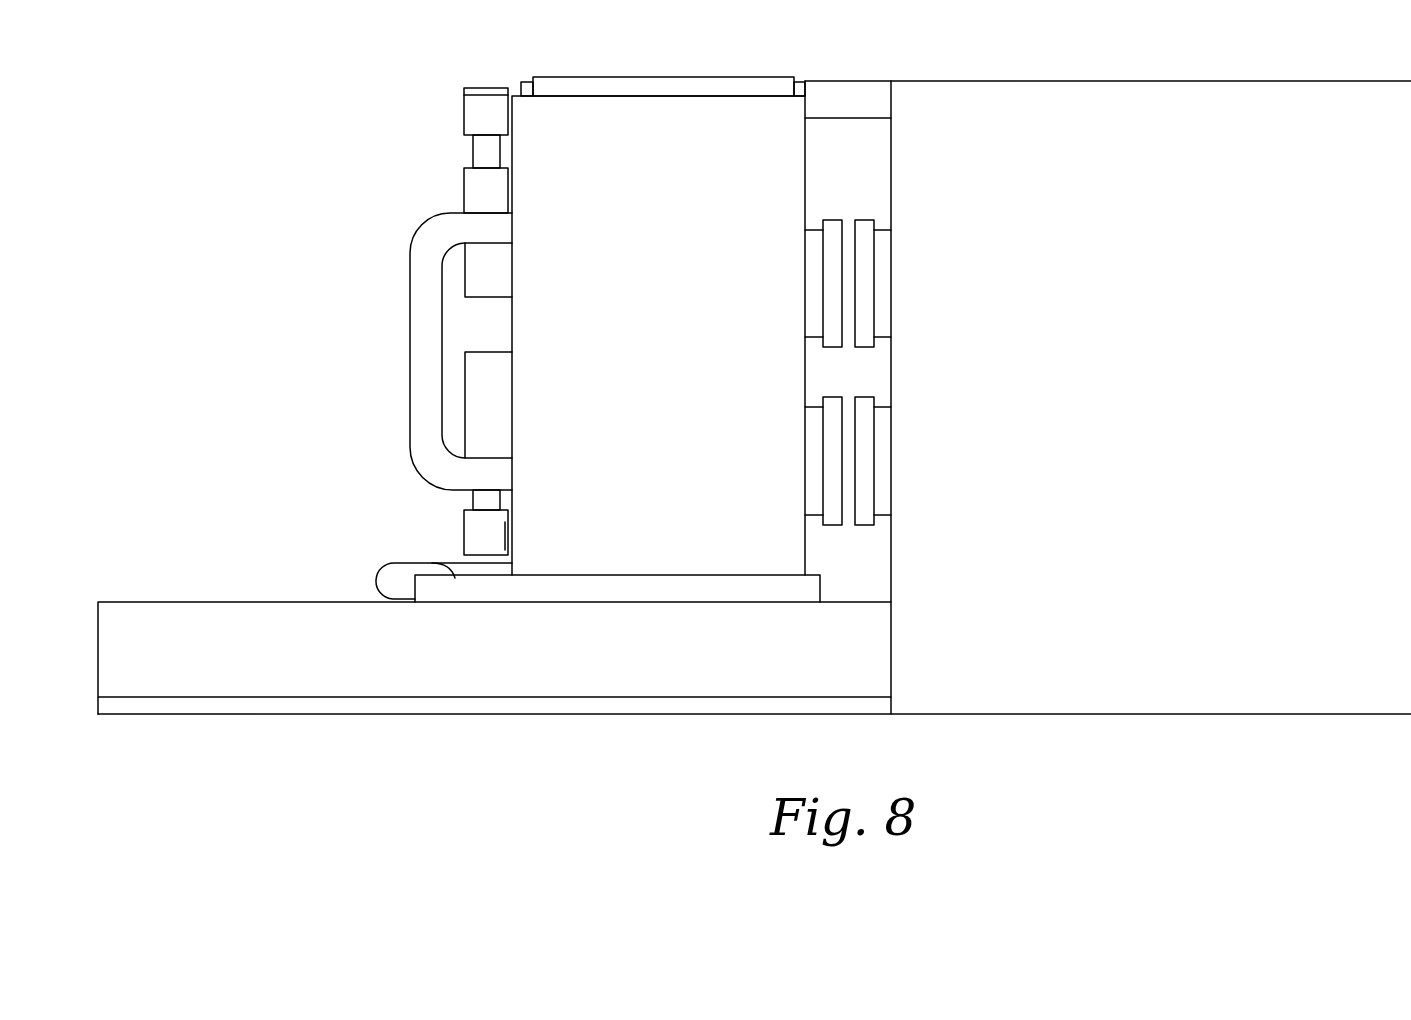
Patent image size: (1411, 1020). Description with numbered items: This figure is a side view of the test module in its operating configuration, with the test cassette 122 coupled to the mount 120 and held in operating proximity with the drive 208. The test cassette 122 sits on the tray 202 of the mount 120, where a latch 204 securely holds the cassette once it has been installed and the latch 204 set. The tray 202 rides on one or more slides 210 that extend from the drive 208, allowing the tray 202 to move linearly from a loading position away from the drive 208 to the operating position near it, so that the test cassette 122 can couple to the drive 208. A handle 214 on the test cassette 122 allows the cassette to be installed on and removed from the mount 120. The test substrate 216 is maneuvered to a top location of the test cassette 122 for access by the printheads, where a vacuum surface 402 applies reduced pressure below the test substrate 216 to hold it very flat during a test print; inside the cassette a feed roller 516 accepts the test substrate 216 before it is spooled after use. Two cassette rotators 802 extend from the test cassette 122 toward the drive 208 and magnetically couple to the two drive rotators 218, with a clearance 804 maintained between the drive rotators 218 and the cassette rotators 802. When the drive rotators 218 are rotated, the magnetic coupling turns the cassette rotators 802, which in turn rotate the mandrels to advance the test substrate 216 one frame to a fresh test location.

The mount 120 is at (1157, 714).
The test cassette 122 is at (614, 85).
The tray 202 is at (631, 575).
The latch 204 is at (440, 562).
The drive 208 is at (1155, 80).
The slide 210 is at (154, 602).
The handle 214 is at (410, 340).
The test substrate 216 is at (733, 78).
The rotator 218 is at (883, 282).
The vacuum surface 402 is at (527, 80).
The feed roller 516 is at (512, 193).
The cassette rotator 802 is at (816, 283).
The clearance 804 is at (846, 325).